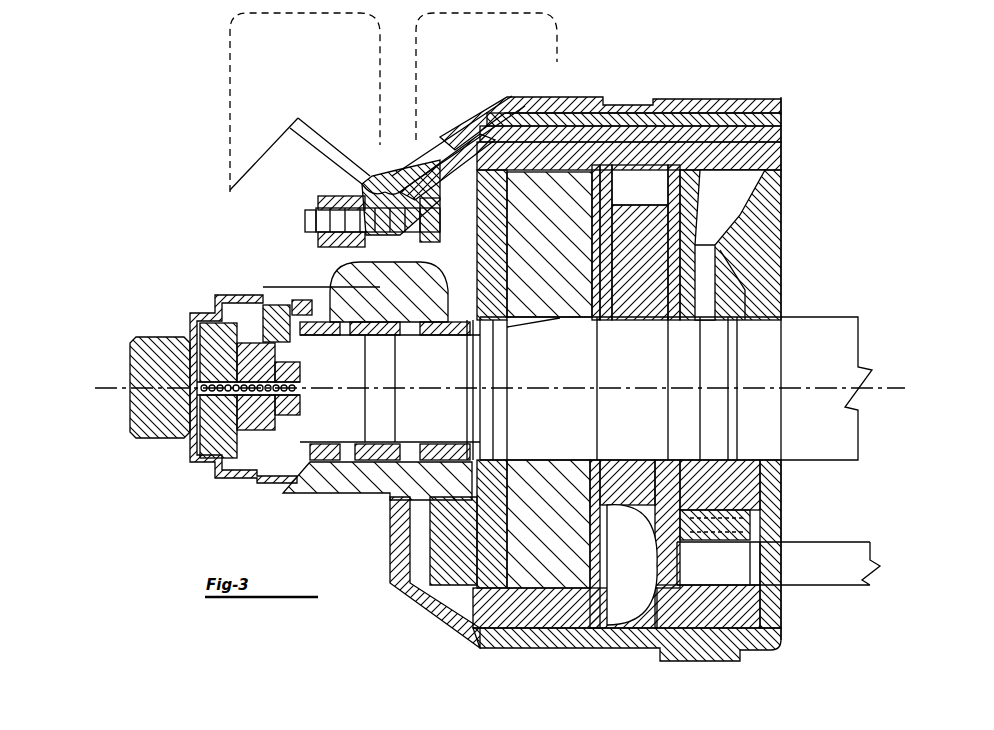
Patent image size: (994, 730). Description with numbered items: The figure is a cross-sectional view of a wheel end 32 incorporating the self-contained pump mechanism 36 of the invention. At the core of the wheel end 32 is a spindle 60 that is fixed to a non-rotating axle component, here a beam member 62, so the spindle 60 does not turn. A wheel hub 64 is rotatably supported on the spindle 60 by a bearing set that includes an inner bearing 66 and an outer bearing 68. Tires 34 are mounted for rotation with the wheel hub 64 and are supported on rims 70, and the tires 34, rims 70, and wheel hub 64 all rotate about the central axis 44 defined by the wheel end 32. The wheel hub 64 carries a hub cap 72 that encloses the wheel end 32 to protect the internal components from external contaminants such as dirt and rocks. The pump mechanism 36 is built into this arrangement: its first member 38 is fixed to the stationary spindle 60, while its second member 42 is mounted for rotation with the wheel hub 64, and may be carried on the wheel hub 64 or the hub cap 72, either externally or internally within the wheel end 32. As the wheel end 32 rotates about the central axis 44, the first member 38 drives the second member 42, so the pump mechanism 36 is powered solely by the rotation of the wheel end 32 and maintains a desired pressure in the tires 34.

The wheel end 32 is at (830, 276).
The tires 34 is at (319, 62).
The pump mechanism 36 is at (100, 428).
The first member 38 is at (222, 422).
The second member 42 is at (163, 440).
The central axis 44 is at (100, 386).
The spindle 60 is at (434, 366).
The beam member 62 is at (850, 345).
The wheel hub 64 is at (347, 484).
The inner bearing 66 is at (420, 444).
The outer bearing 68 is at (303, 300).
The rims 70 is at (405, 162).
The hub cap 72 is at (203, 312).